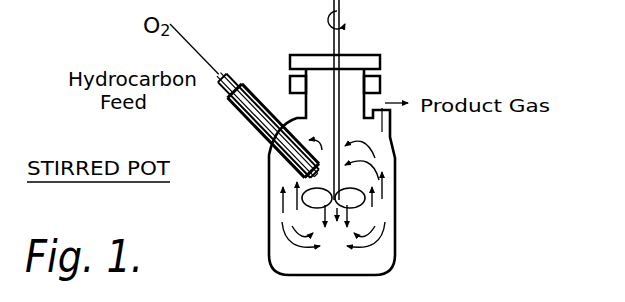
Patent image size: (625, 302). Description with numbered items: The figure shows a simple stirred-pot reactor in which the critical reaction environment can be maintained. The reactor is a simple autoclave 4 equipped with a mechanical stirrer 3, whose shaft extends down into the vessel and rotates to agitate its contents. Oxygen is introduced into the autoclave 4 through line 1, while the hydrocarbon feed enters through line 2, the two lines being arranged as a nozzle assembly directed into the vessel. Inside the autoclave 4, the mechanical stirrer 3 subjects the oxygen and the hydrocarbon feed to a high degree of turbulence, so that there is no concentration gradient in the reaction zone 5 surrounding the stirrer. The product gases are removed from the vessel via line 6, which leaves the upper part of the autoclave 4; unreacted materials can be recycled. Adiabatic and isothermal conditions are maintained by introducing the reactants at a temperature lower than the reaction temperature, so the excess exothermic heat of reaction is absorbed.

The oxygen line 1 is at (206, 37).
The hydrocarbon feed line 2 is at (217, 77).
The mechanical stirrer 3 is at (341, 32).
The autoclave 4 is at (396, 235).
The reaction zone 5 is at (362, 217).
The product gas line 6 is at (385, 103).